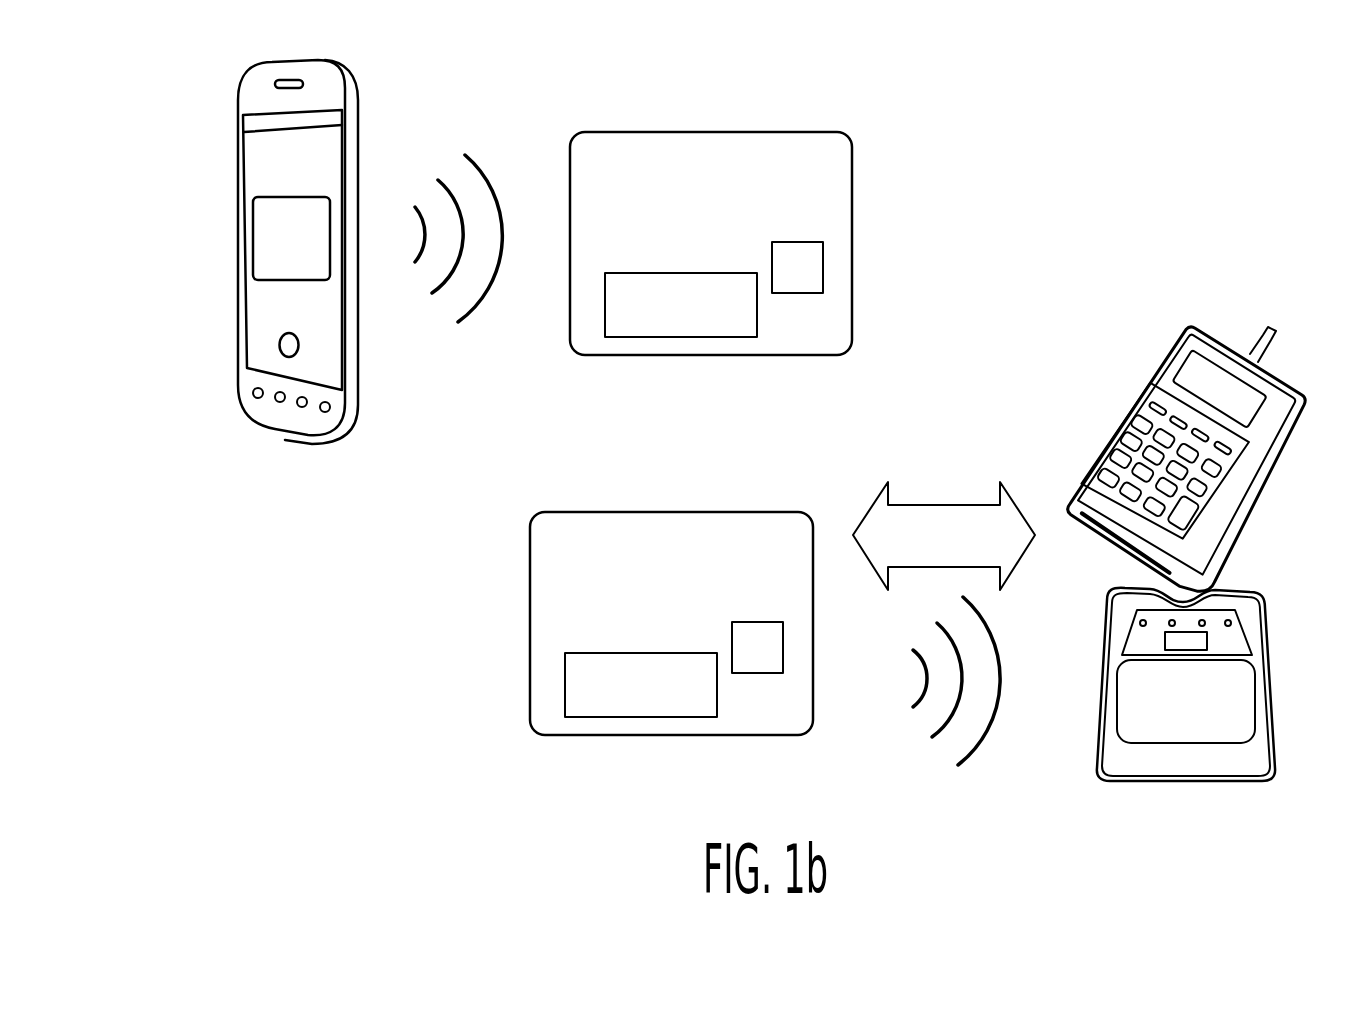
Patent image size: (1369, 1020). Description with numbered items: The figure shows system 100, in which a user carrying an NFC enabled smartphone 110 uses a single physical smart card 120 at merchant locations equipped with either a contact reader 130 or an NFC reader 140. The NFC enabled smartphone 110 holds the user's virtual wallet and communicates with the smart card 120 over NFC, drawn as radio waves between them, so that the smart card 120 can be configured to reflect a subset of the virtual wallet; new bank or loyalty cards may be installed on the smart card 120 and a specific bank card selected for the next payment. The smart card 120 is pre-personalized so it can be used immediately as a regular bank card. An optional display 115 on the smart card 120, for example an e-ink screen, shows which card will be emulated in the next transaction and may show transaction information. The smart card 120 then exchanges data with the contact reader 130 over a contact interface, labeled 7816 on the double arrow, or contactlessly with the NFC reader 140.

The system 100 is at (1279, 158).
The NFC enabled smartphone 110 is at (238, 137).
The display 115 is at (612, 322).
The smart card 120 is at (723, 150).
The contact reader 130 is at (1165, 350).
The NFC reader 140 is at (1270, 638).
The ISO 7816 contact interface 7816 is at (944, 536).